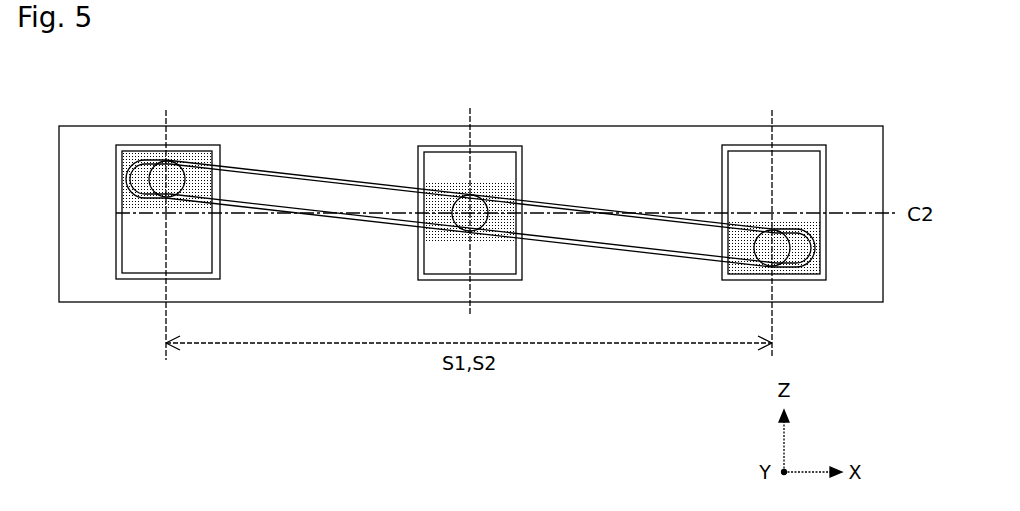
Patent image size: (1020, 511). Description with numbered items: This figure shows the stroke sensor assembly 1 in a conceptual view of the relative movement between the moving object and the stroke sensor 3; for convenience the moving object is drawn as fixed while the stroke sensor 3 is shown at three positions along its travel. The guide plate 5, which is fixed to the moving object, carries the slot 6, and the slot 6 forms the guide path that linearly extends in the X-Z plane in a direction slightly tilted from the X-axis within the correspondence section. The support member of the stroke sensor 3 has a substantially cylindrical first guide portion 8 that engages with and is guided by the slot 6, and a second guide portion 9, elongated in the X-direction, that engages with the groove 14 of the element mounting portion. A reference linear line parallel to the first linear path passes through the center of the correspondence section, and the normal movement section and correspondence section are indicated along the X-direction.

The stroke sensor assembly 1 is at (435, 95).
The stroke sensor 3 is at (180, 148).
The guide plate 5 is at (833, 133).
The slot 6 is at (267, 163).
The first guide portion 8 is at (183, 182).
The second guide portion 9 is at (198, 170).
The groove 14 is at (122, 252).